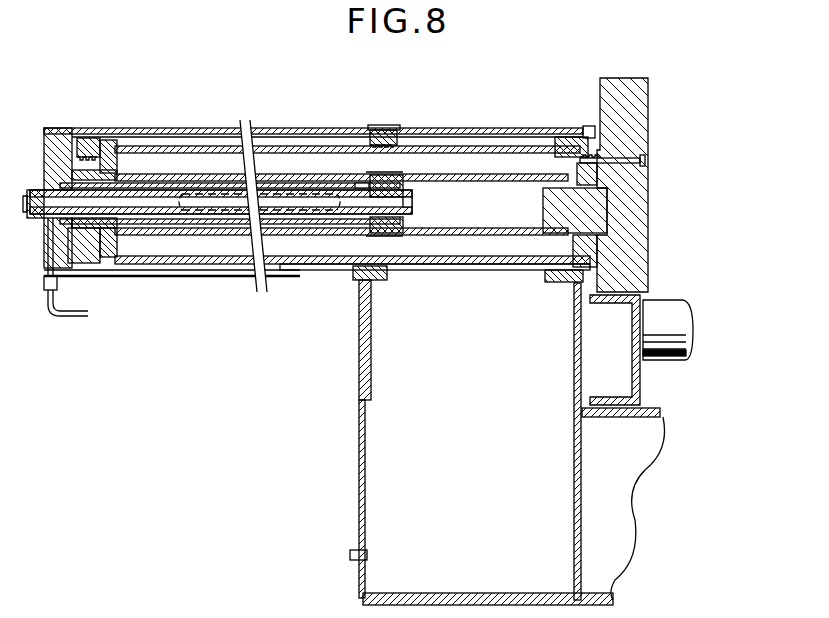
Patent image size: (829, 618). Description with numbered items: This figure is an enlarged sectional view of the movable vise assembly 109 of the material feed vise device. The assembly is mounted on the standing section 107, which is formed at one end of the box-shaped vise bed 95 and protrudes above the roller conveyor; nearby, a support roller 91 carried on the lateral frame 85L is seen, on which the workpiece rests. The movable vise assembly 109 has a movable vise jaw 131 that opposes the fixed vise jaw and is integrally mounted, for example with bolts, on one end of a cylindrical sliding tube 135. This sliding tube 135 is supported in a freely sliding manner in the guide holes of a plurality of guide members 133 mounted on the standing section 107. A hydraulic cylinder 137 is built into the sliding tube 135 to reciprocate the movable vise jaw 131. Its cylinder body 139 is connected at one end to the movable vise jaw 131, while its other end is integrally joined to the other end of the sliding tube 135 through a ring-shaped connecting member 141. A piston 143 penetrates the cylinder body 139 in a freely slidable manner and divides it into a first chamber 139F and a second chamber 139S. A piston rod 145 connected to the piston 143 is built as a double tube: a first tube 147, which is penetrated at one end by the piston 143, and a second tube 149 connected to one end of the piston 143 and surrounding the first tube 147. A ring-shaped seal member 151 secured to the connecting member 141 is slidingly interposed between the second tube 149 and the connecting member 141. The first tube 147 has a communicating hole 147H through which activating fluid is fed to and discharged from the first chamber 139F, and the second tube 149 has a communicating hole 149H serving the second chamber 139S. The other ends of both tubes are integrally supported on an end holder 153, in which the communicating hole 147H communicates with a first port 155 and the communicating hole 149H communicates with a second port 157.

The end holder 153 is at (56, 138).
The second port 157 is at (85, 140).
The ring-shaped seal member 151 is at (123, 172).
The second tube 149 is at (195, 182).
The communicating hole 149H is at (362, 187).
The first tube 147 is at (222, 177).
The communicating hole 147H is at (412, 205).
The piston rod 145 is at (282, 183).
The piston 143 is at (375, 188).
The guide members 133 is at (388, 138).
The cylinder body 139 is at (507, 177).
The second chamber 139S is at (238, 262).
The first chamber 139F is at (460, 235).
The hydraulic cylinder 137 is at (322, 243).
The ring-shaped connecting member 141 is at (88, 263).
The cylindrical sliding tube 135 is at (515, 272).
The movable vise jaw 131 is at (648, 233).
The movable vise assembly 109 is at (642, 182).
The standing section 107 is at (368, 358).
The support rollers 91 is at (647, 325).
The lateral frame 85L is at (595, 396).
The vise bed 95 is at (628, 457).
The first port 155 is at (36, 263).